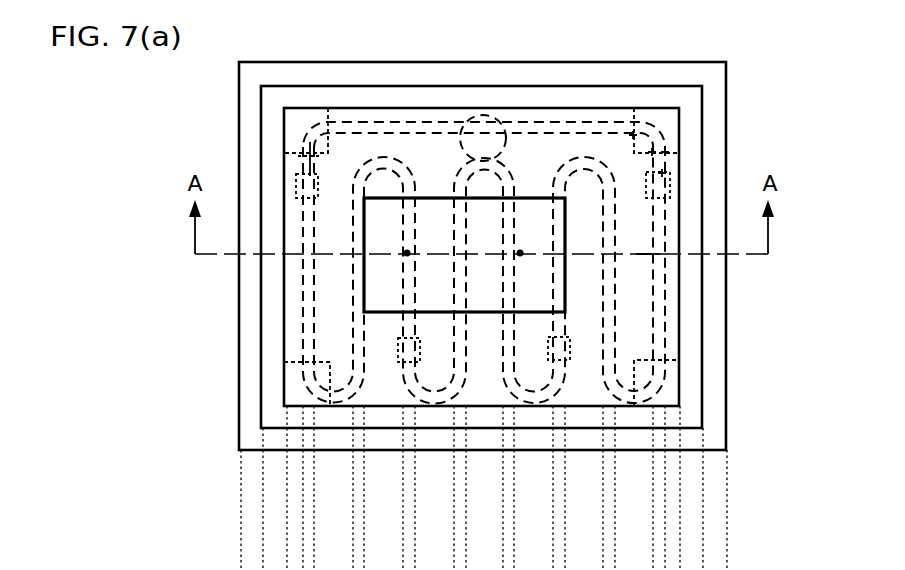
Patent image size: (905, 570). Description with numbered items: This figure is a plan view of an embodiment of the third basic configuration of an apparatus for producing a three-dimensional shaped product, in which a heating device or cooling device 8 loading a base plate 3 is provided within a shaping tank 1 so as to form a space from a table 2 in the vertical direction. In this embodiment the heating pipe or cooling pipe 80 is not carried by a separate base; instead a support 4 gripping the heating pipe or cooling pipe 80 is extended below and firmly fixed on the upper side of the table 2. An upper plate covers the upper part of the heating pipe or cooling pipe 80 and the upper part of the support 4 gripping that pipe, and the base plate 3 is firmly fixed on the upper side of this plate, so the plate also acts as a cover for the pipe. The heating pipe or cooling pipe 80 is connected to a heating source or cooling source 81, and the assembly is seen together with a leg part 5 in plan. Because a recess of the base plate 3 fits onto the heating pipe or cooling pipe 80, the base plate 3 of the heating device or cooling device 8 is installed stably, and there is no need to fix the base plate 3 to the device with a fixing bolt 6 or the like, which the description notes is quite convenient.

The shaping tank 1 is at (726, 100).
The table 2 is at (703, 218).
The base plate 3 is at (436, 180).
The support 4 is at (296, 183).
The leg part 5 is at (293, 118).
The fixing bolt 6 is at (407, 253).
The heating device or cooling device 8 is at (587, 157).
The heating pipe or cooling pipe 80 is at (306, 162).
The heating source or cooling source 81 is at (480, 132).